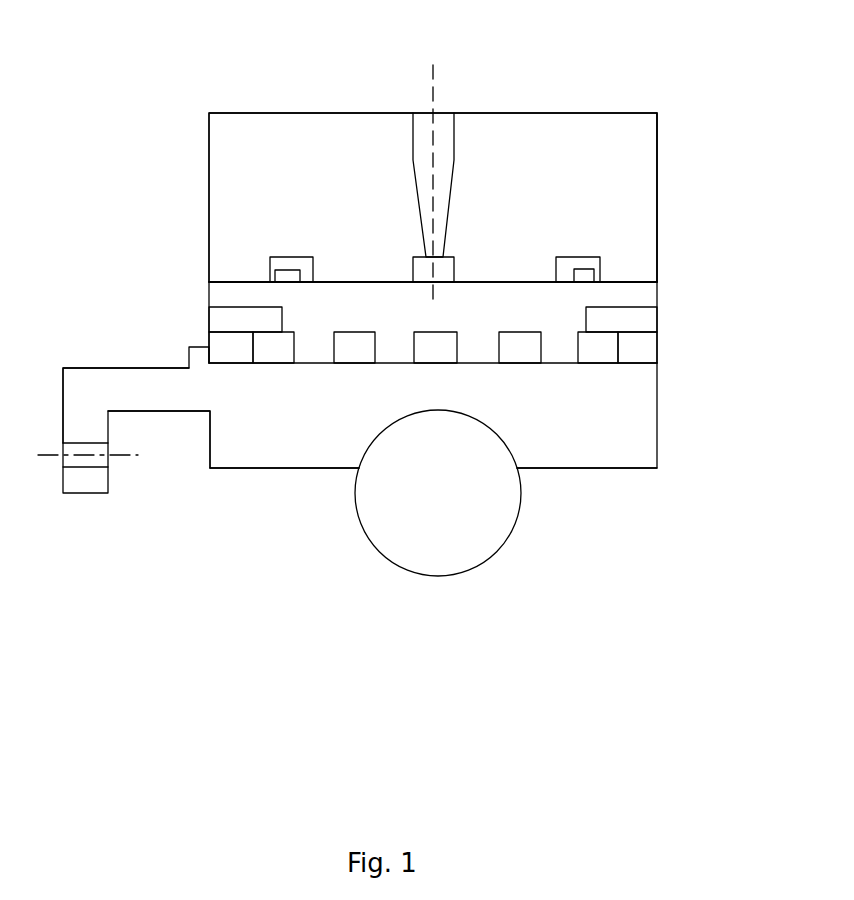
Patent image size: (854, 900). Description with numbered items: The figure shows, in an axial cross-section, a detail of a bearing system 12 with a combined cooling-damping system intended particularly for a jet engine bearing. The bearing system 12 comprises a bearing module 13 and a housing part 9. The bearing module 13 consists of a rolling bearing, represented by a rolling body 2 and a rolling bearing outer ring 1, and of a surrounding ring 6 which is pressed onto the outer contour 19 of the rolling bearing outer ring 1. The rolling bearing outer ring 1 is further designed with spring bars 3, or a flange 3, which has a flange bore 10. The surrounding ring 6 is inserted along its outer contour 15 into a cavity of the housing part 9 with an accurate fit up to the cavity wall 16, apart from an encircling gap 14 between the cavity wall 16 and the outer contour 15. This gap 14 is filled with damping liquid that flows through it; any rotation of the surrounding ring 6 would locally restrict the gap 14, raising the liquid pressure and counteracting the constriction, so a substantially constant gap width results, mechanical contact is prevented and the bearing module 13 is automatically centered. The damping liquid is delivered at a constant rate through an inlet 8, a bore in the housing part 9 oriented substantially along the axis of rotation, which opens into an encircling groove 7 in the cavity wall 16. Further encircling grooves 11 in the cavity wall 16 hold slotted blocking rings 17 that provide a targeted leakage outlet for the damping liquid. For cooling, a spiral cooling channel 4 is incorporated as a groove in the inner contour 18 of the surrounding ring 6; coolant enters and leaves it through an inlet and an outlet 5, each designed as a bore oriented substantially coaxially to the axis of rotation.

The rolling bearing outer ring 1 is at (283, 443).
The rolling body 2 is at (393, 523).
The spring bars 3 is at (158, 387).
The cooling channel 4 is at (603, 360).
The cooling oil inlet and outlet 5 is at (237, 322).
The surrounding ring 6 is at (643, 297).
The encircling groove 7 is at (451, 267).
The damper oil inlet 8 is at (426, 173).
The housing part 9 is at (234, 220).
The flange bore 10 is at (90, 460).
The grooves with blocking rings 11 is at (297, 270).
The bearing system 12 is at (646, 87).
The bearing module 13 is at (640, 346).
The gap 14 is at (657, 258).
The outer contour of the surrounding ring 15 is at (625, 258).
The cavity wall 16 is at (229, 282).
The blocking rings 17 is at (287, 272).
The inner contour of the surrounding ring 18 is at (383, 366).
The outer contour of the outer rolling bearing ring 19 is at (277, 366).